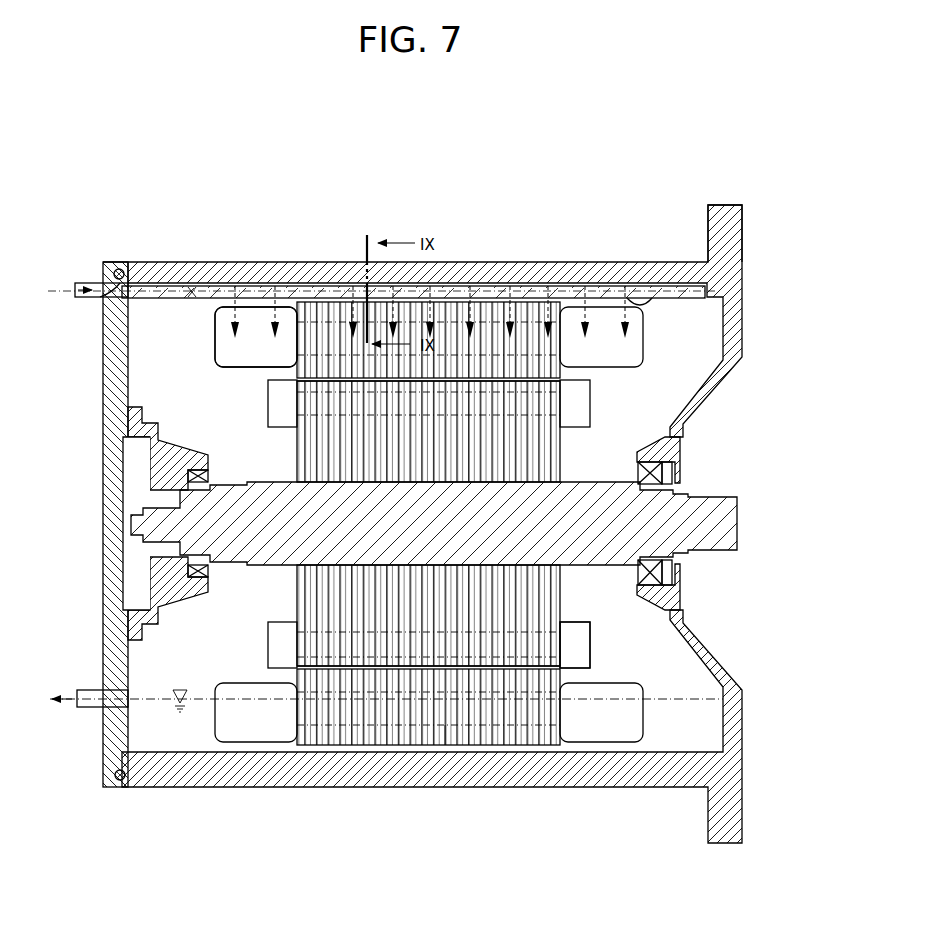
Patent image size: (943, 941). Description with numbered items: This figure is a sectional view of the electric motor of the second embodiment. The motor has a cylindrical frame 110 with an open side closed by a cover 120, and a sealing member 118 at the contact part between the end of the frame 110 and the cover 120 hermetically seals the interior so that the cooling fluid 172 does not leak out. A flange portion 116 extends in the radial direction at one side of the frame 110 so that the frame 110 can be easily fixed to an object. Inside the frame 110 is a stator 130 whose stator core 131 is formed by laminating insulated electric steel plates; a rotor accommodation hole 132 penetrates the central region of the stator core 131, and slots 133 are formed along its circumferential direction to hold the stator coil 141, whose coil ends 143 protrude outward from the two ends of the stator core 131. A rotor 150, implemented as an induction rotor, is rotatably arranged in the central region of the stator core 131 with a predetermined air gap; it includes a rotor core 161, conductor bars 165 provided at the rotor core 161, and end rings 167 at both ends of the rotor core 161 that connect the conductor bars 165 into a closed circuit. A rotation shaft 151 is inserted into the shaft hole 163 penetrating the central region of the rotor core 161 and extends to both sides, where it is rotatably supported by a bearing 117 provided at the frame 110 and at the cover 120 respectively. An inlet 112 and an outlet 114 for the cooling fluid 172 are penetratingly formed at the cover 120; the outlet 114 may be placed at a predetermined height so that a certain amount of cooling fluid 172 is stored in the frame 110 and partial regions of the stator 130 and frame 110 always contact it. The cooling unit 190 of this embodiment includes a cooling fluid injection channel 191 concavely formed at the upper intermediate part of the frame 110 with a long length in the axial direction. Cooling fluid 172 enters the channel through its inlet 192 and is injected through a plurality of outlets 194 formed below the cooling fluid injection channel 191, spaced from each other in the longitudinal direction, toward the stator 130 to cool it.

The frame 110 is at (531, 258).
The inlet 112 is at (98, 292).
The outlet 114 is at (90, 688).
The flange portion 116 is at (708, 226).
The bearing 117 is at (672, 475).
The sealing member 118 is at (120, 781).
The cover 120 is at (103, 378).
The stator 130 is at (429, 533).
The stator core 131 is at (478, 745).
The rotor accommodation hole 132 is at (530, 666).
The slots 133 is at (445, 725).
The stator coil 141 is at (596, 748).
The coil ends 143 is at (262, 330).
The rotor 150 is at (528, 642).
The rotation shaft 151 is at (722, 533).
The rotor core 161 is at (349, 620).
The shaft hole 163 is at (674, 572).
The conductor bars 165 is at (400, 640).
The end rings 167 is at (285, 656).
The cooling fluid 172 is at (690, 727).
The cooling unit 190 is at (368, 244).
The cooling fluid injection channel 191 is at (192, 288).
The inlet 192 is at (120, 268).
The outlets 194 is at (645, 296).